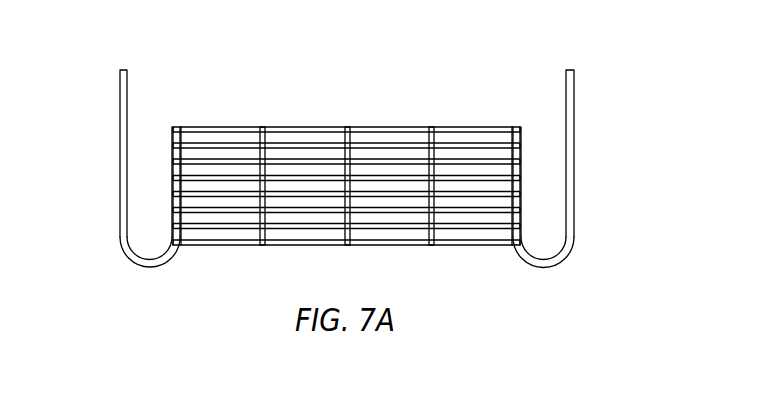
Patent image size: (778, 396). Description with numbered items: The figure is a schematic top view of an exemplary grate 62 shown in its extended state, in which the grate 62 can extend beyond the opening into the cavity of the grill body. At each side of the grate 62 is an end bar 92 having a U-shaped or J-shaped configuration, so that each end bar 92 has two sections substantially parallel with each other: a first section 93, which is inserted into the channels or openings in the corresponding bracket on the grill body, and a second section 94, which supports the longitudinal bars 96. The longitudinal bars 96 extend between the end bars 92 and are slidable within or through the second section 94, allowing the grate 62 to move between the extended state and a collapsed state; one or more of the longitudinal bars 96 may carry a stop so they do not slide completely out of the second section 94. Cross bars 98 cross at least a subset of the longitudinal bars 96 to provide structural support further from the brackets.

The grate 62 is at (344, 142).
The end bar 92 is at (120, 98).
The first section 93 is at (120, 207).
The second section 94 is at (173, 127).
The longitudinal bar 96 is at (243, 127).
The cross bar 98 is at (265, 130).